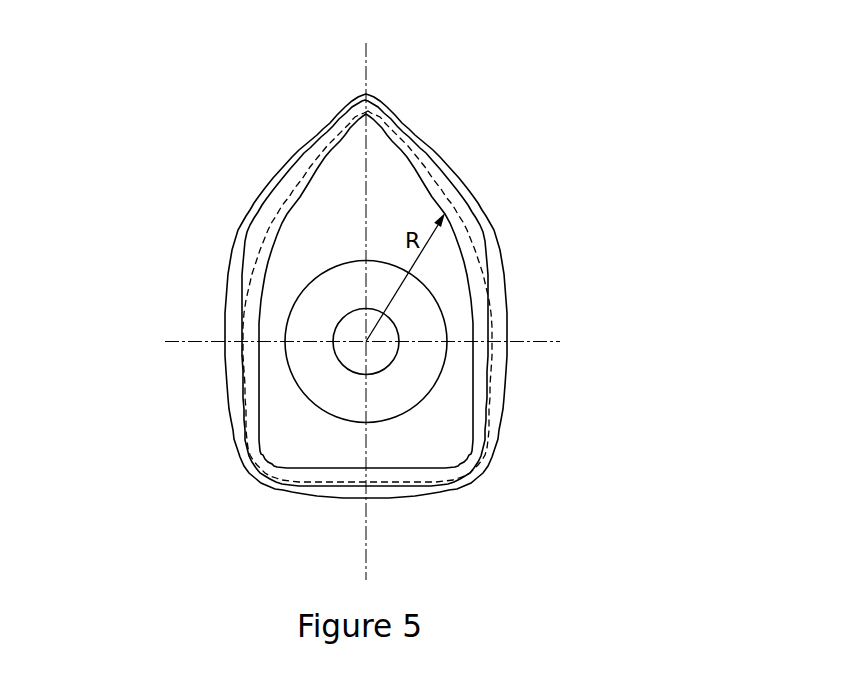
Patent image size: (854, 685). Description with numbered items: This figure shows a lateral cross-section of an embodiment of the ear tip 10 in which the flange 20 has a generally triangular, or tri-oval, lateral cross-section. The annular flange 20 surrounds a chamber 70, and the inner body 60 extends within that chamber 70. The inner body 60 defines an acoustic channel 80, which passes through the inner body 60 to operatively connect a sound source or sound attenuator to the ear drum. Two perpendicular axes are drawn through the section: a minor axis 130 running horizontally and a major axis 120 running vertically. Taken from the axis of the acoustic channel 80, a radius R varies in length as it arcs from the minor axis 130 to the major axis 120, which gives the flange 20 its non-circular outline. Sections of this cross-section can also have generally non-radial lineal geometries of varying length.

The ear tip 10 is at (552, 300).
The annular flange 20 is at (472, 265).
The inner body 60 is at (426, 377).
The chamber 70 is at (300, 219).
The acoustic channel 80 is at (357, 355).
The major axis 120 is at (378, 63).
The minor axis 130 is at (182, 332).